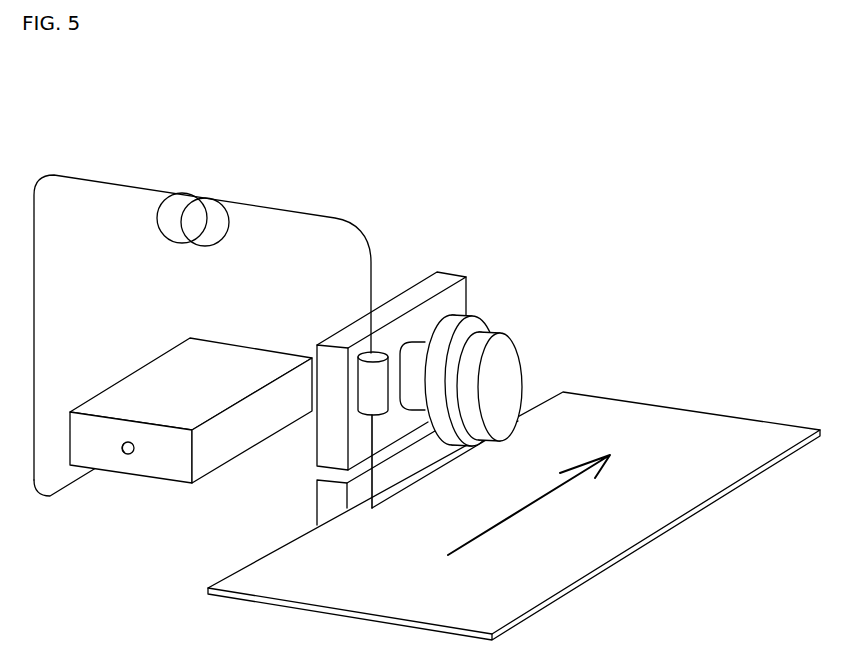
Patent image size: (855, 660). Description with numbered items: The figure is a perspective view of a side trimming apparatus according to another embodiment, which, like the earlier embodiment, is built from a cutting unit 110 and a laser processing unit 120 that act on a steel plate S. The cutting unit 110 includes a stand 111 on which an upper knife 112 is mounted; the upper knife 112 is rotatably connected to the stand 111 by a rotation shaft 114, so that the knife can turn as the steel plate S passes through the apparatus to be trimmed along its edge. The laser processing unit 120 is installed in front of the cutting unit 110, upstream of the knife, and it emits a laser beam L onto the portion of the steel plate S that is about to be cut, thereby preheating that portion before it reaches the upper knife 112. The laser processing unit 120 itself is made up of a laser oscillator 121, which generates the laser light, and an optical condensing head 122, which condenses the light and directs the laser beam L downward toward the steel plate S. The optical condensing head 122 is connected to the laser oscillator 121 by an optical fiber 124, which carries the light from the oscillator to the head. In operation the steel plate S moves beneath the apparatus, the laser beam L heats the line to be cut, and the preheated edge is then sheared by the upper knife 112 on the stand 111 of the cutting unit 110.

The cutting unit 110 is at (478, 372).
The stand 111 is at (441, 276).
The upper knife 112 is at (458, 318).
The rotation shaft 114 is at (427, 345).
The laser processing unit 120 is at (211, 280).
The laser oscillator 121 is at (156, 372).
The optical condensing head 122 is at (366, 351).
The optical fiber 124 is at (265, 203).
The laser beam L is at (372, 430).
The steel plate S is at (638, 422).